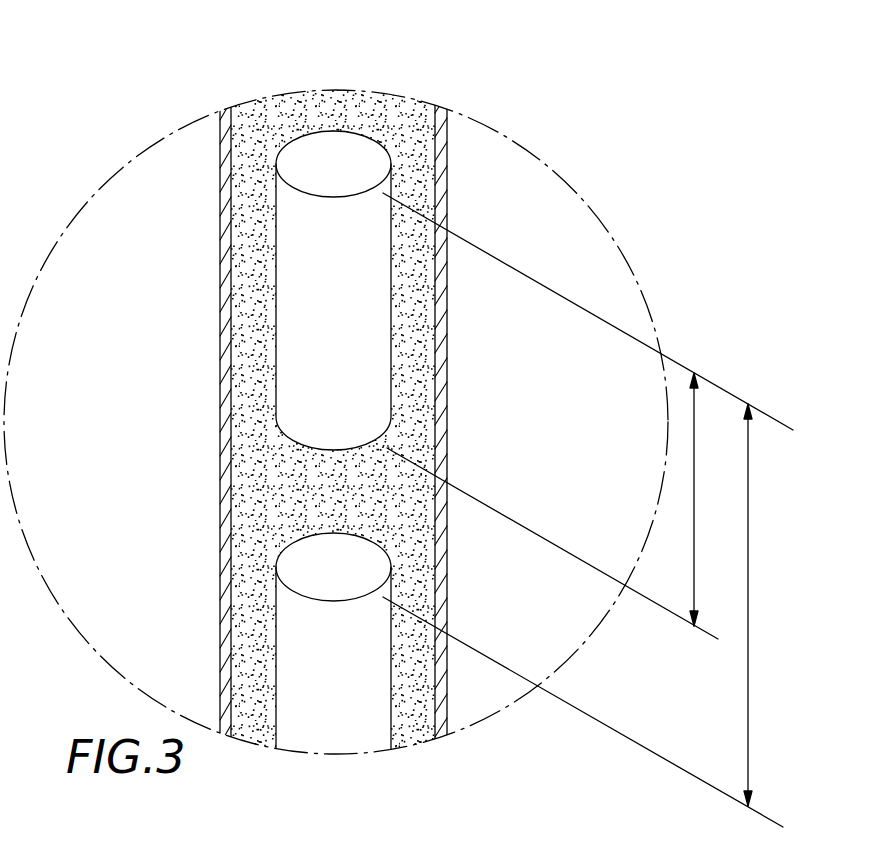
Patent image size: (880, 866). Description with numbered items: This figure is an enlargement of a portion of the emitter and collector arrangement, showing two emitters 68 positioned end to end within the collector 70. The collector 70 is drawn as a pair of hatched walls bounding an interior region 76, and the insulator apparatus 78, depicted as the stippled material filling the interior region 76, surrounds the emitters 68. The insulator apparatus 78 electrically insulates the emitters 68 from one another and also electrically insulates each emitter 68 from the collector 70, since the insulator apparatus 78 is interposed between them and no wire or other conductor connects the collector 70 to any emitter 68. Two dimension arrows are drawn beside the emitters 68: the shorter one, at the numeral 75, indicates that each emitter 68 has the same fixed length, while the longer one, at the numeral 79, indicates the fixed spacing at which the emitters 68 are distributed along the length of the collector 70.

The emitter 68 is at (317, 140).
The collector 70 is at (220, 617).
The fixed length of emitter 75 is at (695, 487).
The interior region 76 is at (244, 470).
The insulator apparatus 78 is at (242, 323).
The fixed spacing of emitters 79 is at (748, 595).